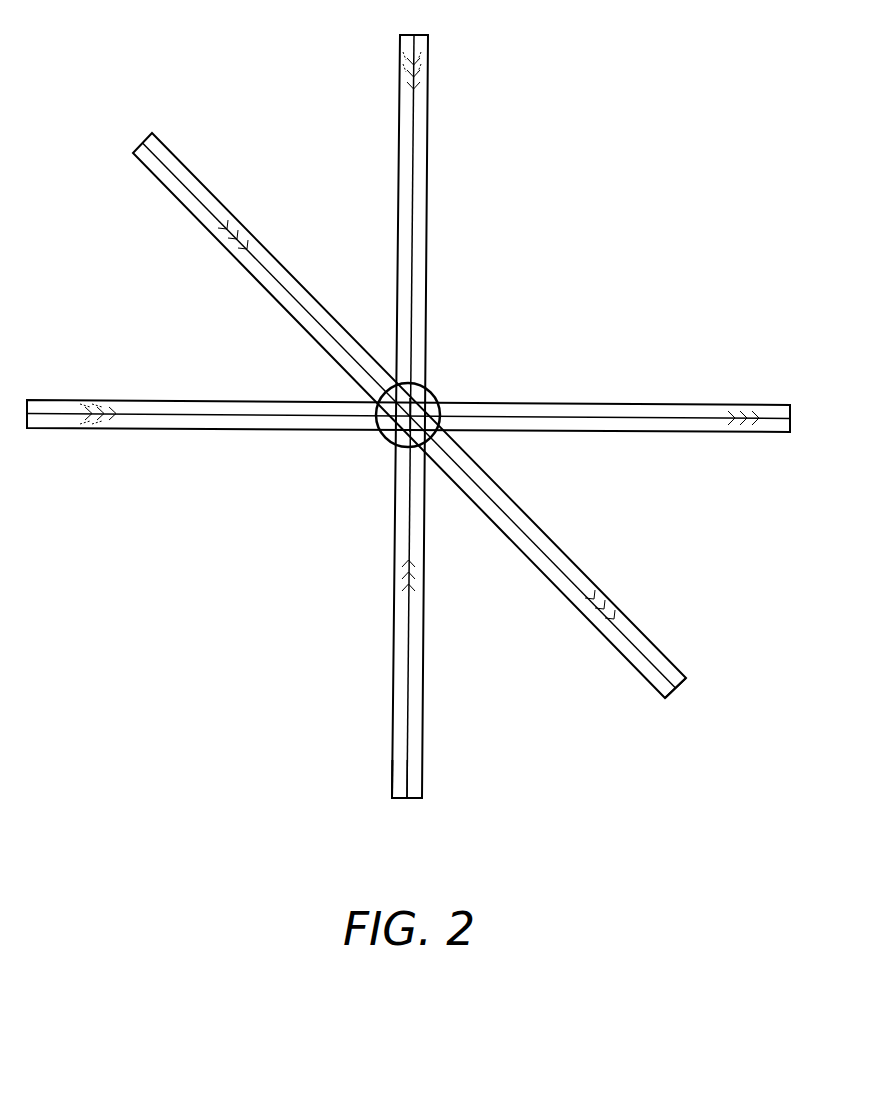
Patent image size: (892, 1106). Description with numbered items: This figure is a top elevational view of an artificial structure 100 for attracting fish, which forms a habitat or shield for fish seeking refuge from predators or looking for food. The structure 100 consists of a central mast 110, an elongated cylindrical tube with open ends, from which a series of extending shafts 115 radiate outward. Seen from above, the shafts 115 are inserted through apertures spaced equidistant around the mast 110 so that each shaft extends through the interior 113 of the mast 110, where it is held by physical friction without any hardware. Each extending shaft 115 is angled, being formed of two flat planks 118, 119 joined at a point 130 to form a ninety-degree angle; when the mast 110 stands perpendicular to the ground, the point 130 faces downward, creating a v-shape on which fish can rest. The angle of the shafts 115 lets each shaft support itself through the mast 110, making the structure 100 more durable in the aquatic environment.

The artificial structure 100 is at (462, 352).
The central mast 110 is at (388, 443).
The interior 113 is at (416, 430).
The extending shaft 115 is at (426, 168).
The flat plank 118 is at (408, 773).
The flat plank 119 is at (400, 783).
The point 130 is at (412, 802).